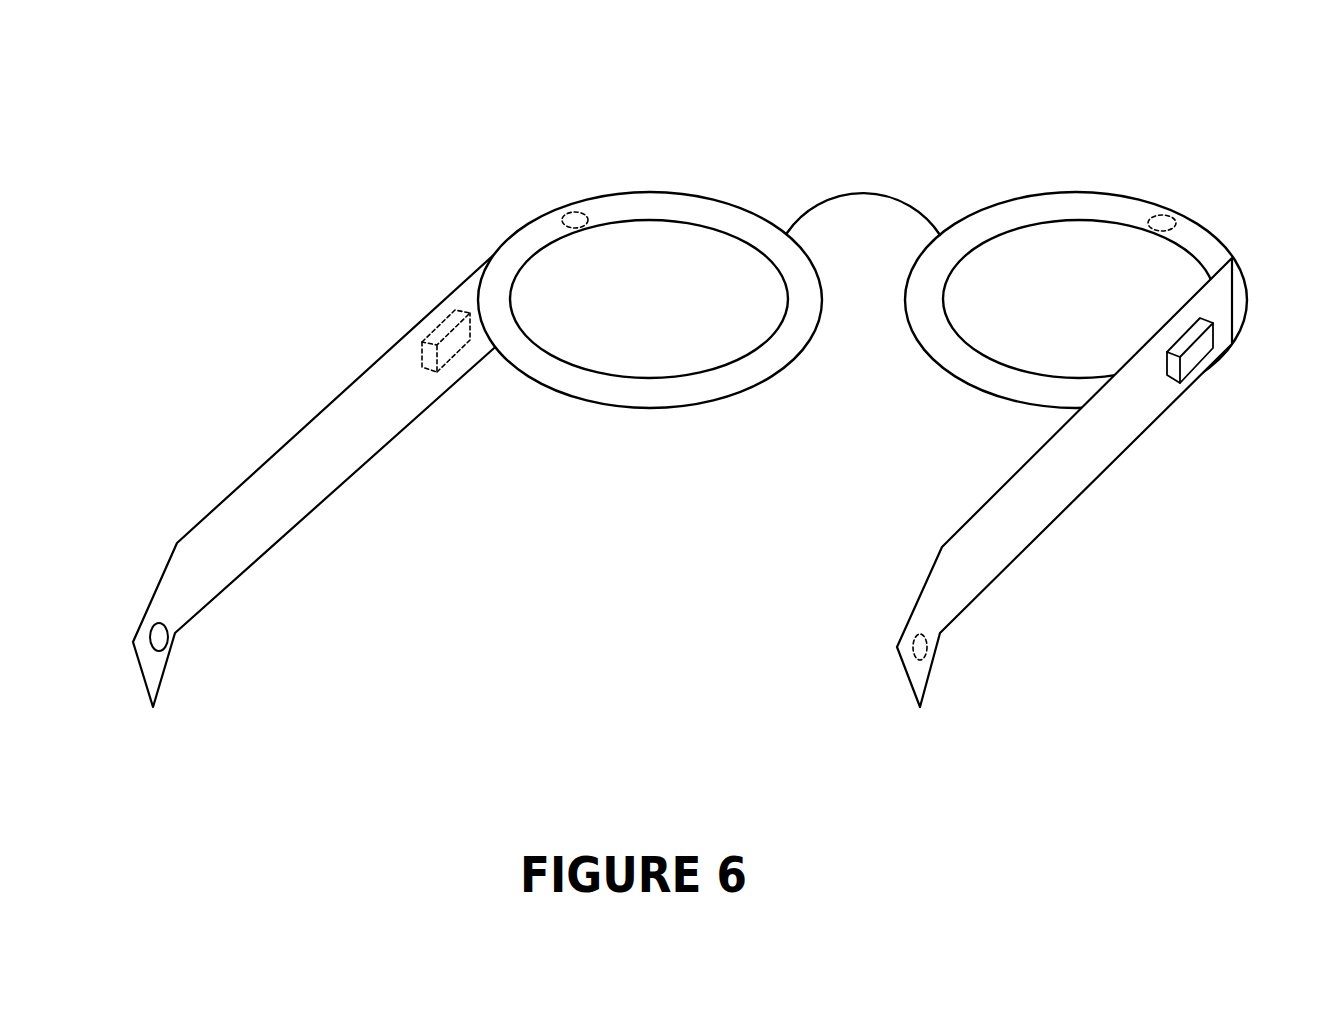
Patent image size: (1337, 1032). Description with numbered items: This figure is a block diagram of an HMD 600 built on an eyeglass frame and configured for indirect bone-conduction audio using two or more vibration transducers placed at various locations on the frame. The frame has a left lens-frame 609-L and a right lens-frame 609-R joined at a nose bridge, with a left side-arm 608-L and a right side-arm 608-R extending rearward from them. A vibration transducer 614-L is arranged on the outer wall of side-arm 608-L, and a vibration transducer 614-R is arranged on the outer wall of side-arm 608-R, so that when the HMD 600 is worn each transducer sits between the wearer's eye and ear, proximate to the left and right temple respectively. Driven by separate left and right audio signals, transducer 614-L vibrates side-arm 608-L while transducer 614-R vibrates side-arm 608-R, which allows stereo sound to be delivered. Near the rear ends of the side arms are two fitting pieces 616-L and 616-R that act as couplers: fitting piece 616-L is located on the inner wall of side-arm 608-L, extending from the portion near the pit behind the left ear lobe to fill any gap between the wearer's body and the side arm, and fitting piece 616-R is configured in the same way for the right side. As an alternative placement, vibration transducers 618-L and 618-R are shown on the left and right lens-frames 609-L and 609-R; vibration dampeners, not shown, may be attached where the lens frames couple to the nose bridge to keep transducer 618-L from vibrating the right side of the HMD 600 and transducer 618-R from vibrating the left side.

The HMD 600 is at (1090, 146).
The side-arm 608-L is at (331, 487).
The side-arm 608-R is at (1059, 500).
The lens-frame 609-L is at (650, 303).
The lens-frame 609-R is at (1065, 304).
The vibration transducer 614-L is at (400, 361).
The vibration transducer 614-R is at (1201, 356).
The fitting piece 616-L is at (160, 650).
The fitting piece 616-R is at (916, 658).
The vibration transducer 618-L is at (573, 210).
The vibration transducer 618-R is at (1162, 221).